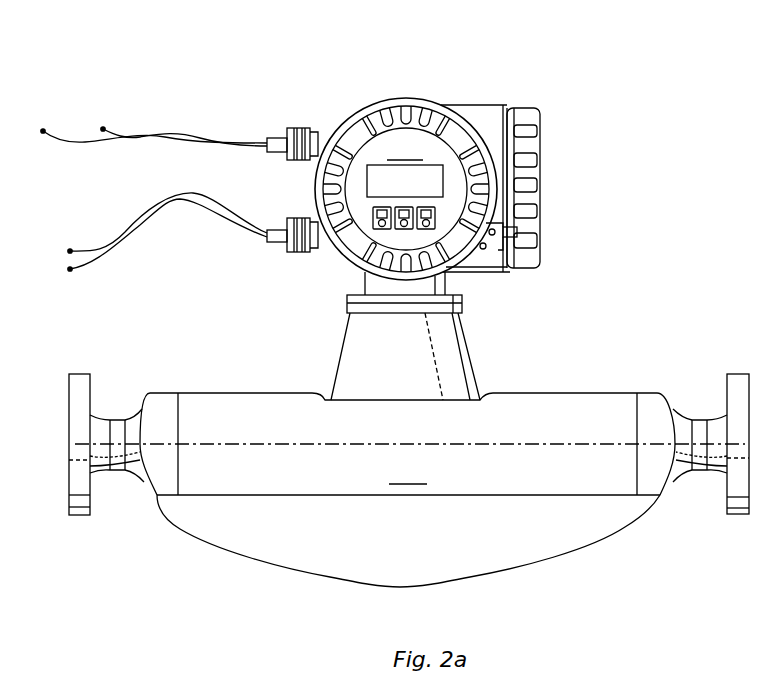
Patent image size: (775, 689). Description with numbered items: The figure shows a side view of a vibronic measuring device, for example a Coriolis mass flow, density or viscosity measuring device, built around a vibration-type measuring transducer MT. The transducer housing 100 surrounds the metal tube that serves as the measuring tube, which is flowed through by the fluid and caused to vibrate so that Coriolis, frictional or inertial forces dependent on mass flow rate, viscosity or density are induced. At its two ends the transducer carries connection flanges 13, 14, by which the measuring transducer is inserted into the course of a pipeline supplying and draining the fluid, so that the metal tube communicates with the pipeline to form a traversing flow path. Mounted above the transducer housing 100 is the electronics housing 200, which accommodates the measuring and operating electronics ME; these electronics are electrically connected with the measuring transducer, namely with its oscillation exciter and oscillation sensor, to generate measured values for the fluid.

The electronics housing 200 is at (482, 115).
The transducer housing 100 is at (552, 403).
The connection flange 13 is at (78, 387).
The connection flange 14 is at (738, 383).